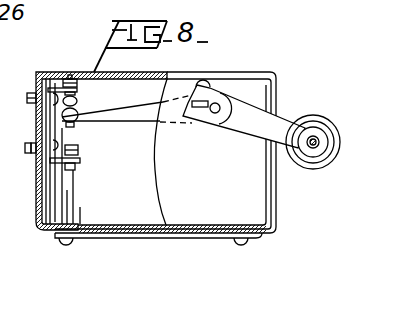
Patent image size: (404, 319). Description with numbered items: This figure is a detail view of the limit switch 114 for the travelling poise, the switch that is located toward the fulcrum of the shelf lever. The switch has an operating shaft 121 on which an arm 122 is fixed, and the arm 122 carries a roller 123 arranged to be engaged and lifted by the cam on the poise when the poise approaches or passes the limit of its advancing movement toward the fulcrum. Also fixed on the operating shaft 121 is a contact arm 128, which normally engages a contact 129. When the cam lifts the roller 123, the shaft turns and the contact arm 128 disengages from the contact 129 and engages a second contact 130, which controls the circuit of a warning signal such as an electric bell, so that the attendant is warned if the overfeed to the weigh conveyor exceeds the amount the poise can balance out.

The limit switch 114 is at (183, 217).
The operating shaft 121 is at (215, 113).
The arm 122 is at (260, 118).
The roller 123 is at (332, 122).
The contact arm 128 is at (143, 113).
The contact 129 is at (76, 104).
The contact 130 is at (80, 154).